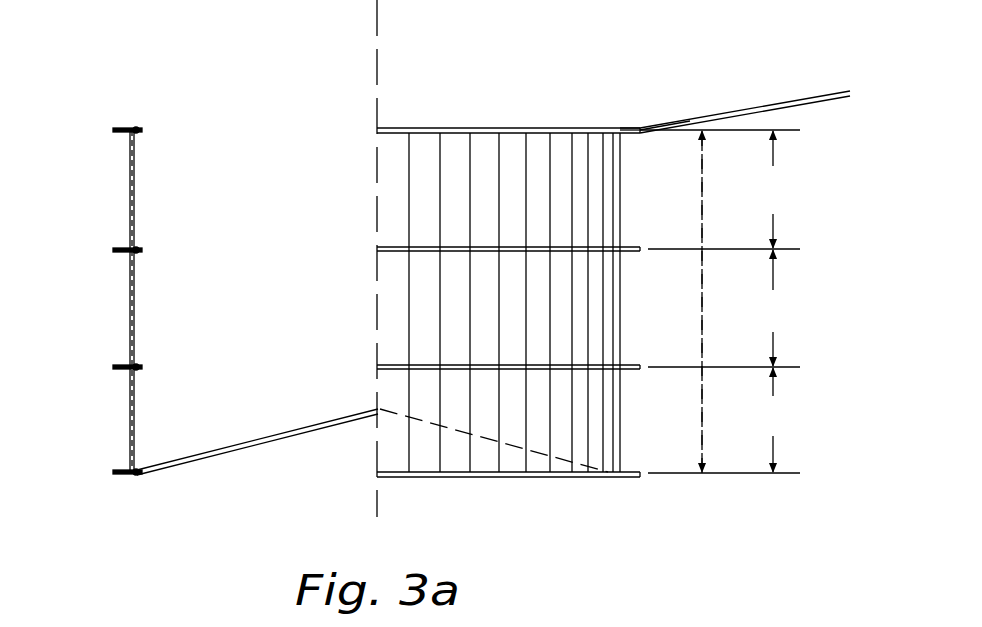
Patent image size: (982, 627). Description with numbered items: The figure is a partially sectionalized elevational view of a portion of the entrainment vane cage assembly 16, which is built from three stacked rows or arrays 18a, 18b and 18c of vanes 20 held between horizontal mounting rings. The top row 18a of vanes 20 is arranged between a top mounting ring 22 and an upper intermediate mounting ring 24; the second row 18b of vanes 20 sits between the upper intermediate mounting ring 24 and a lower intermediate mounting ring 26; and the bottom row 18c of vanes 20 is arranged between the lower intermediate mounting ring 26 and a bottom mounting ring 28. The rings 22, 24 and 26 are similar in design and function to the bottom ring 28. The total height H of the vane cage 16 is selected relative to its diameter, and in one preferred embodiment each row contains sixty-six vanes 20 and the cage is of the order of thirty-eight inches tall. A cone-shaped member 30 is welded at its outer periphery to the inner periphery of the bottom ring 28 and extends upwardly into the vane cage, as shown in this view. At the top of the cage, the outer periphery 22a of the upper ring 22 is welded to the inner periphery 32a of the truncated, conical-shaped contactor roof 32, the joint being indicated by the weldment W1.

The entrainment vane cage assembly 16 is at (527, 499).
The top row of vanes 18a is at (772, 189).
The second row of vanes 18b is at (772, 308).
The bottom row of vanes 18c is at (771, 420).
The vanes 20 is at (130, 184).
The top mounting ring 22 is at (121, 128).
The outer periphery of upper ring 22a is at (620, 128).
The upper intermediate mounting ring 24 is at (120, 251).
The lower intermediate mounting ring 26 is at (118, 370).
The bottom mounting ring 28 is at (118, 477).
The cone-shaped member 30 is at (213, 461).
The contactor roof 32 is at (822, 101).
The inner periphery of contactor roof 32a is at (688, 121).
The weldment W1 is at (640, 130).
The height of the vane cage H is at (702, 302).